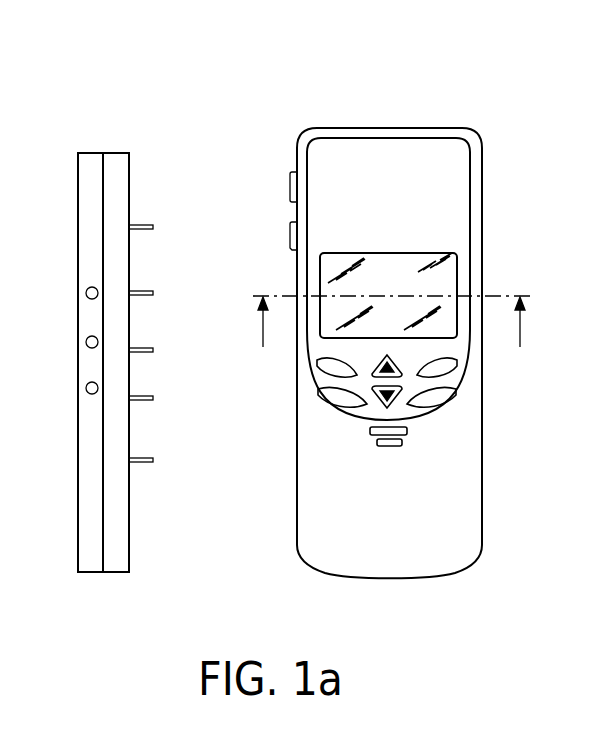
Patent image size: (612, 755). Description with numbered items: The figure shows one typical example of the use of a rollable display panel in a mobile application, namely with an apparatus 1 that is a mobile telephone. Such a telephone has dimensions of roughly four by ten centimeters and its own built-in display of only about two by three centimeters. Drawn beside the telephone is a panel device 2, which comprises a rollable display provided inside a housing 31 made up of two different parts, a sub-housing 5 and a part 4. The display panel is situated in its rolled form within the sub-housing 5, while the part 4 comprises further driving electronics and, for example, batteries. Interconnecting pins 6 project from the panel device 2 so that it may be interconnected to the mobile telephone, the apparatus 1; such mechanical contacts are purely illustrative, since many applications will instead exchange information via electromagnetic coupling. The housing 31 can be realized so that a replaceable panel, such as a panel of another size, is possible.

The apparatus 1 is at (482, 416).
The panel device 2 is at (101, 332).
The housing part 4 is at (117, 153).
The sub-housing 5 is at (89, 153).
The interconnecting pins 6 is at (145, 225).
The housing 31 is at (104, 289).